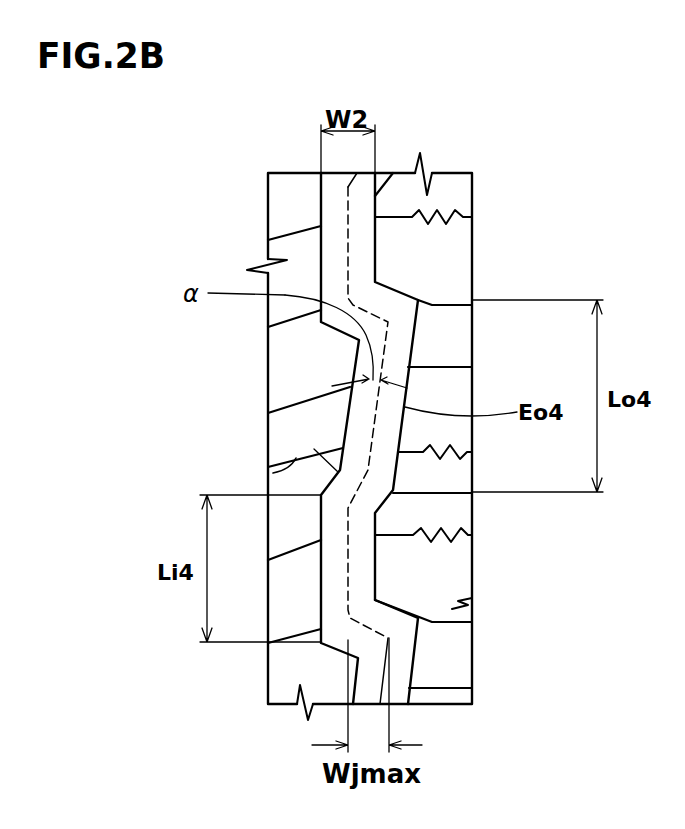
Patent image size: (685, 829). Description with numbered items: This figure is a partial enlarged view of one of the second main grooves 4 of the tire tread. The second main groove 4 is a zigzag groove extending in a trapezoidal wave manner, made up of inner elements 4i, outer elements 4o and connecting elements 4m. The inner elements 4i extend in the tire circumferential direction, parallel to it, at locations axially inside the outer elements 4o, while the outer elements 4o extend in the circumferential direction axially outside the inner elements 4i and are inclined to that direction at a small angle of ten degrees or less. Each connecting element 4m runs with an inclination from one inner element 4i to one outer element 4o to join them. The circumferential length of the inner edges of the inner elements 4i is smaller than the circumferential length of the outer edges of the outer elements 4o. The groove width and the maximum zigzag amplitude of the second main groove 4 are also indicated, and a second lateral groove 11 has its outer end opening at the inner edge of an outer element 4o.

The second main groove 4 is at (360, 244).
The outer element 4o is at (365, 360).
The connecting element 4m is at (336, 482).
The inner element 4i is at (362, 567).
The second lateral groove 11 is at (275, 474).